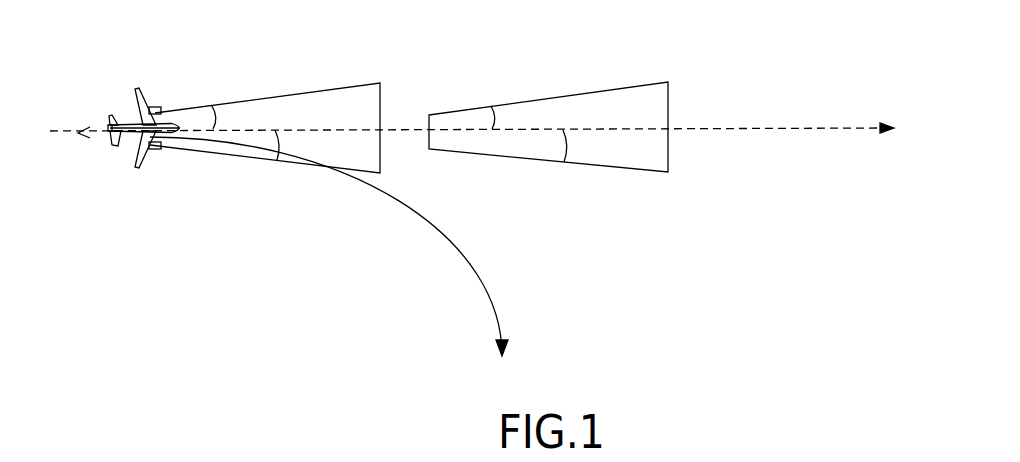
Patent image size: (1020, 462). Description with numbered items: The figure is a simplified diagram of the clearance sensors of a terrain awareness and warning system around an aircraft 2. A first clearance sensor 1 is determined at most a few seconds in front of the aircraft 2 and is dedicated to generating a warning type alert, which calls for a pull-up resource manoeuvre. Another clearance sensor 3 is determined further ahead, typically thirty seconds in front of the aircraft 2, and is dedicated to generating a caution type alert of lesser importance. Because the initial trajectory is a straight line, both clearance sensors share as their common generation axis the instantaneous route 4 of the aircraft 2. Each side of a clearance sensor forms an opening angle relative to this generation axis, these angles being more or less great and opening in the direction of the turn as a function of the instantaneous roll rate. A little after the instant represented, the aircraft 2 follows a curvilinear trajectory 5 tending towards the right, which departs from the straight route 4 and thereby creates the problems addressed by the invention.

The first clearance sensor 1 is at (312, 90).
The aircraft 2 is at (120, 143).
The caution clearance sensor 3 is at (570, 96).
The instantaneous route 4 is at (804, 128).
The curvilinear trajectory 5 is at (471, 262).